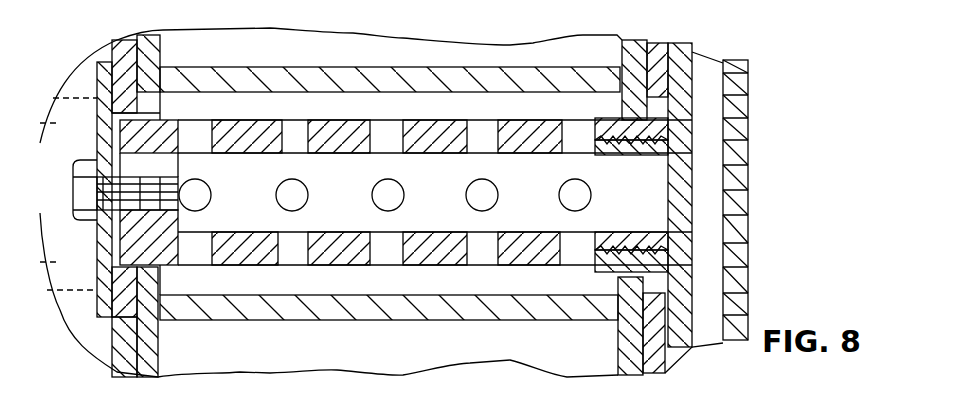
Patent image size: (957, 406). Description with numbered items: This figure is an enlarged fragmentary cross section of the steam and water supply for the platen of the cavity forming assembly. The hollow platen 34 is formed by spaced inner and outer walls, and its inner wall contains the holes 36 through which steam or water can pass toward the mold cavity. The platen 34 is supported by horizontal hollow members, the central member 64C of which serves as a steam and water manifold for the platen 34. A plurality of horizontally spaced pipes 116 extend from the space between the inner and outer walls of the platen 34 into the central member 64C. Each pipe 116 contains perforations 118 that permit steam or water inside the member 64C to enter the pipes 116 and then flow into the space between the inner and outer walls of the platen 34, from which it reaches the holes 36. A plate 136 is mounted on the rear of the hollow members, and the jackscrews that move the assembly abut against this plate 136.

The hollow platen 34 is at (760, 150).
The holes 36 is at (733, 226).
The central member 64C is at (353, 307).
The pipes 116 is at (433, 253).
The perforations 118 is at (380, 128).
The plate 136 is at (120, 353).